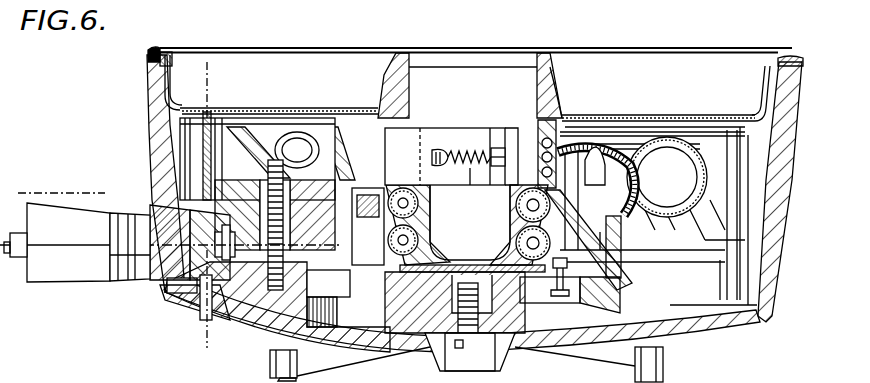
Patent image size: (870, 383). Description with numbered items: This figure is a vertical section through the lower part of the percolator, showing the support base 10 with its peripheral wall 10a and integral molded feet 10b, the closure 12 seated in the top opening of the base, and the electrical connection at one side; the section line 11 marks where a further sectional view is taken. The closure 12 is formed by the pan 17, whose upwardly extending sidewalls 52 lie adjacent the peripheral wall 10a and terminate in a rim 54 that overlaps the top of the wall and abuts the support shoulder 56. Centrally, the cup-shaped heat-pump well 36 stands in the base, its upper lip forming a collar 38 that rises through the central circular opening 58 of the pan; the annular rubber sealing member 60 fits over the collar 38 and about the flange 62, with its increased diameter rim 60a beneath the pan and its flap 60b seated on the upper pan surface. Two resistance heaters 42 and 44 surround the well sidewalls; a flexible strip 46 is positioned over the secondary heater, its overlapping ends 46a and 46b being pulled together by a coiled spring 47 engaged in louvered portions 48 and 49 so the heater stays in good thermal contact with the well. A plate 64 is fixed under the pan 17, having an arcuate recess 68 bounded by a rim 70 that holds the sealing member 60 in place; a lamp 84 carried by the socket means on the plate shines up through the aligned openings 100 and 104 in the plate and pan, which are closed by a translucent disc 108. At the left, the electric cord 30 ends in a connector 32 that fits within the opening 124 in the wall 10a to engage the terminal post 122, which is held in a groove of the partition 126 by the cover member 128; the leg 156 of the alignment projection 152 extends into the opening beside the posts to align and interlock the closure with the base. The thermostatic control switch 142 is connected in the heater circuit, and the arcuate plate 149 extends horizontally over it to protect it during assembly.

The support base 10 is at (802, 126).
The peripheral wall 10a is at (150, 82).
The feet 10b is at (272, 366).
The section line 11 is at (190, 87).
The closure 12 is at (283, 118).
The pan 17 is at (326, 116).
The electric cord 30 is at (14, 258).
The connector 32 is at (74, 270).
The heat-pump well 36 is at (540, 85).
The collar 38 is at (414, 92).
The resistance heater 42 is at (520, 243).
The resistance heater 44 is at (620, 160).
The flexible strip 46 is at (420, 140).
The end of strip 46a is at (448, 152).
The end of strip 46b is at (496, 182).
The coiled spring 47 is at (470, 168).
The louvered portion 48 is at (436, 165).
The louvered portion 49 is at (500, 148).
The sidewalls 52 is at (772, 80).
The rim 54 is at (151, 62).
The support shoulder 56 is at (800, 64).
The central circular opening 58 is at (558, 92).
The sealing member 60 is at (556, 108).
The rim of sealing member 60a is at (572, 110).
The flap 60b is at (380, 112).
The flange 62 is at (545, 138).
The plate 64 is at (268, 126).
The arcuate recess 68 is at (408, 130).
The rim 70 is at (353, 196).
The lamp 84 is at (690, 190).
The opening 100 is at (742, 128).
The opening 104 is at (728, 125).
The disc 108 is at (684, 116).
The terminal post 122 is at (163, 290).
The opening 124 is at (156, 220).
The partition 126 is at (277, 256).
The cover member 128 is at (260, 126).
The thermostatic control switch 142 is at (570, 303).
The plate 149 is at (690, 140).
The alignment projection 152 is at (150, 120).
The leg 156 is at (170, 298).